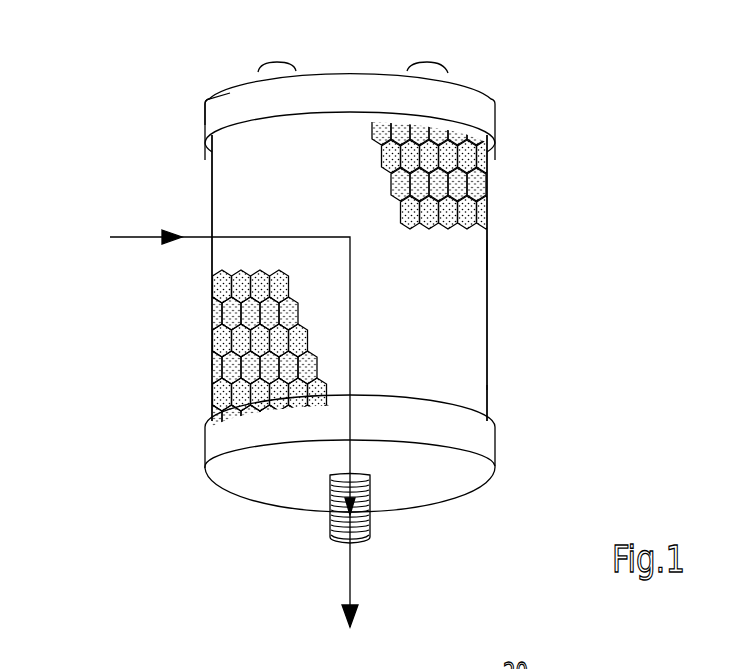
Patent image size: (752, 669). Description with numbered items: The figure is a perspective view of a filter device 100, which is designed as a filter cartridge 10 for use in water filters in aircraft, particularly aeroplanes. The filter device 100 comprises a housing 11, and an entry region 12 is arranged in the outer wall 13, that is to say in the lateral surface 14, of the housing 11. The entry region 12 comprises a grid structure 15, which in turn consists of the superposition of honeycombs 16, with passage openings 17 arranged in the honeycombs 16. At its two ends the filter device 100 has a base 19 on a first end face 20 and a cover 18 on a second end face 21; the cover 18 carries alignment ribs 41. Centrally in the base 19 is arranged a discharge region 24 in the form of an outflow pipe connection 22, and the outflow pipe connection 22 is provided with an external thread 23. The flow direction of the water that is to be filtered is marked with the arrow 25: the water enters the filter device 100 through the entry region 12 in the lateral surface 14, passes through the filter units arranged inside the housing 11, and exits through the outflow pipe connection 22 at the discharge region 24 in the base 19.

The filter device 100 is at (672, 139).
The filter cartridge 10 is at (215, 202).
The housing 11 is at (212, 345).
The entry region 12 is at (190, 383).
The outer wall 13 is at (487, 367).
The lateral surface 14 is at (487, 395).
The grid structure 15 is at (500, 266).
The honeycombs 16 is at (490, 172).
The passage openings 17 is at (399, 116).
The cover 18 is at (350, 66).
The base 19 is at (450, 508).
The first end face 20 is at (256, 530).
The second end face 21 is at (220, 81).
The outflow pipe connection 22 is at (338, 528).
The external thread 23 is at (330, 520).
The discharge region 24 is at (380, 545).
The arrow 25 is at (170, 230).
The alignment ribs 41 is at (273, 62).